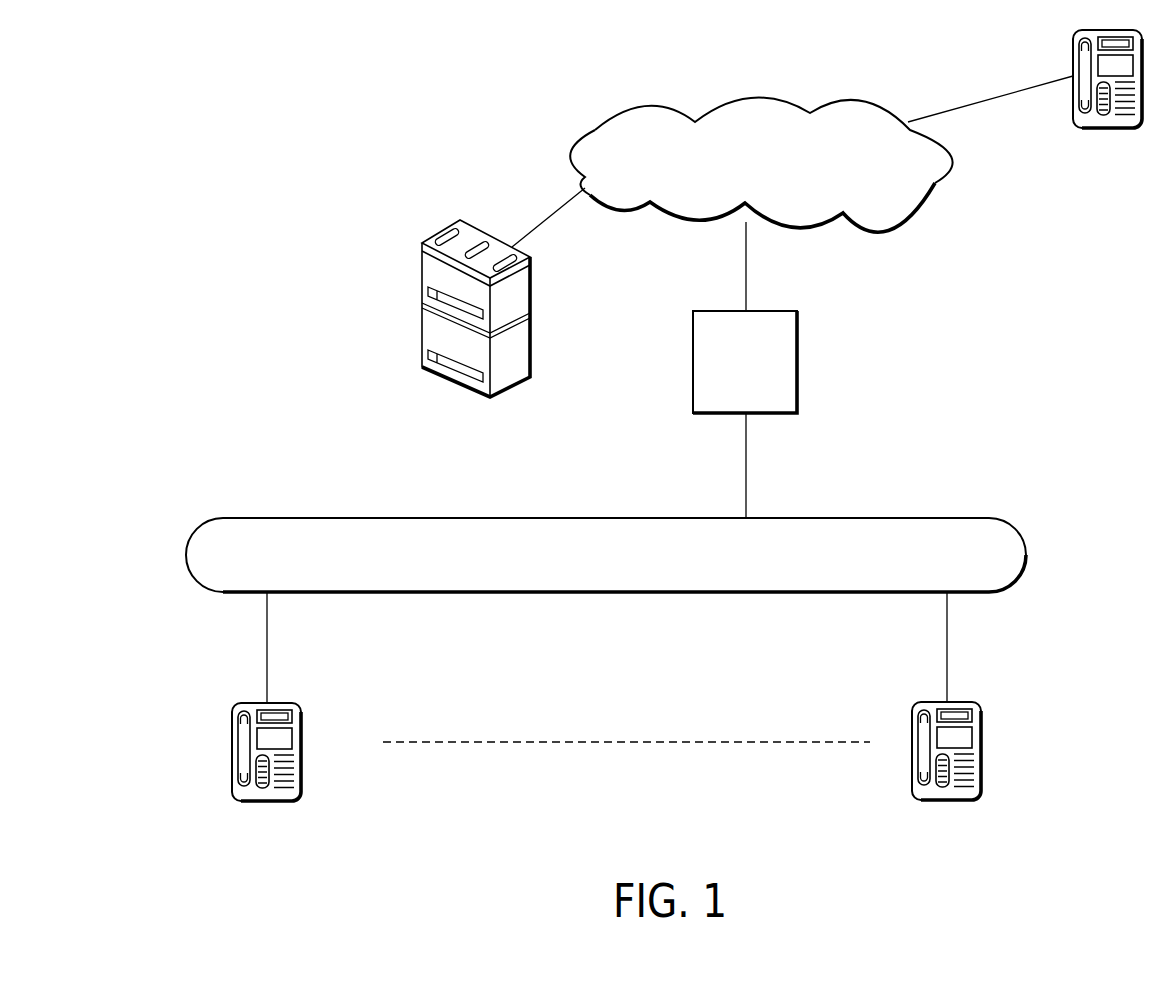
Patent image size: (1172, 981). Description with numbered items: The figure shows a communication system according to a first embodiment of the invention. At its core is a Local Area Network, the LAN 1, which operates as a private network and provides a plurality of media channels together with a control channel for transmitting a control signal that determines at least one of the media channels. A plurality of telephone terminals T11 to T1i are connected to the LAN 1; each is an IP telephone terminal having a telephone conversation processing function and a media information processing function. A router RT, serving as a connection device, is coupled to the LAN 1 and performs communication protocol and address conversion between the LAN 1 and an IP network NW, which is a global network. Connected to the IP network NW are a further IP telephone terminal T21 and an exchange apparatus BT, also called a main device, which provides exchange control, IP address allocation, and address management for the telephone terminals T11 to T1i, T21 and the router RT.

The IP network NW is at (573, 147).
The exchange apparatus BT is at (535, 347).
The router RT is at (798, 357).
The LAN 1 is at (970, 517).
The telephone terminal T21 is at (1108, 128).
The telephone terminal T11 is at (268, 803).
The telephone terminal T1i is at (947, 801).